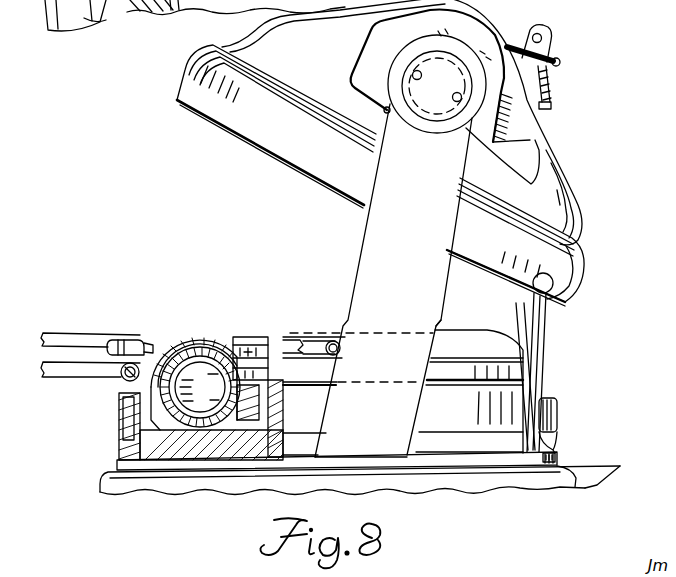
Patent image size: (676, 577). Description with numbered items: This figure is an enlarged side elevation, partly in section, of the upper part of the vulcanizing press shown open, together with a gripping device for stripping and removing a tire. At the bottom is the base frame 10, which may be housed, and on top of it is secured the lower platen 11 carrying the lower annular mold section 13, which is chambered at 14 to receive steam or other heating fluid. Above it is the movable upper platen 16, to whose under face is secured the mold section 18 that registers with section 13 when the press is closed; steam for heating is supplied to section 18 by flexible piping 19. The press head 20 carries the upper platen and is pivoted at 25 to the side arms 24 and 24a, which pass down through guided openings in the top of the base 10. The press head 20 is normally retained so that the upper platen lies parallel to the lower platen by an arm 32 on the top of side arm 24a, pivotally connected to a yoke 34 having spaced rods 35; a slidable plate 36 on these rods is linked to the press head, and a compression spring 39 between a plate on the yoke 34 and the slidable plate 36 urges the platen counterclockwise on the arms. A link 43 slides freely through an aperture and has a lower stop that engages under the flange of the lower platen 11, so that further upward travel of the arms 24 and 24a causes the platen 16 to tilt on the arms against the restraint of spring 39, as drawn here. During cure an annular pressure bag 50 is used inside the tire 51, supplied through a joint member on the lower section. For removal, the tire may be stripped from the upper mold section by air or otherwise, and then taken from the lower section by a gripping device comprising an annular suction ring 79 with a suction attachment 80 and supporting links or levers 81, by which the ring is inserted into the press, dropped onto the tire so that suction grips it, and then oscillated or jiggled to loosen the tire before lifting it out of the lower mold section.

The base frame 10 is at (103, 486).
The lower platen 11 is at (117, 469).
The lower annular section of tire mold 13 is at (557, 438).
The chamber 14 is at (127, 443).
The movable platen 16 is at (557, 160).
The mold section 18 is at (582, 256).
The flexible piping 19 is at (547, 366).
The press head 20 is at (483, 55).
The side arm 24 is at (362, 272).
The side arm 24a is at (444, 291).
The pivot 25 is at (442, 62).
The arm 32 is at (530, 23).
The yoke 34 is at (561, 62).
The rods 35 is at (548, 86).
The slidable plate 36 is at (551, 105).
The compression spring 39 is at (512, 125).
The link 43 is at (527, 334).
The annular pressure bag 50 is at (170, 343).
The tire 51 is at (194, 360).
The annular suction ring 79 is at (203, 338).
The suction attachment 80 is at (143, 338).
The supporting links or levers 81 is at (90, 332).